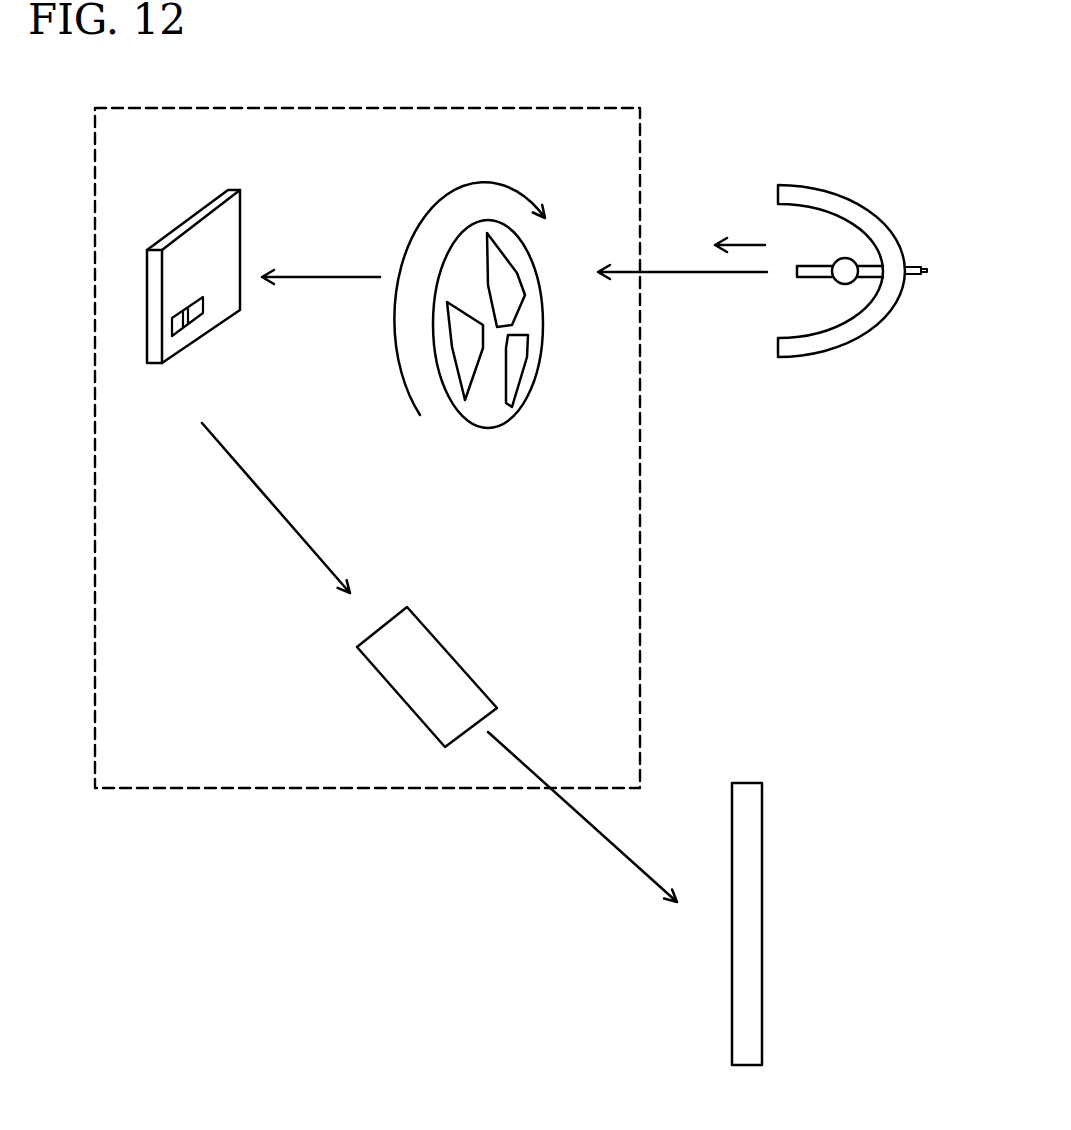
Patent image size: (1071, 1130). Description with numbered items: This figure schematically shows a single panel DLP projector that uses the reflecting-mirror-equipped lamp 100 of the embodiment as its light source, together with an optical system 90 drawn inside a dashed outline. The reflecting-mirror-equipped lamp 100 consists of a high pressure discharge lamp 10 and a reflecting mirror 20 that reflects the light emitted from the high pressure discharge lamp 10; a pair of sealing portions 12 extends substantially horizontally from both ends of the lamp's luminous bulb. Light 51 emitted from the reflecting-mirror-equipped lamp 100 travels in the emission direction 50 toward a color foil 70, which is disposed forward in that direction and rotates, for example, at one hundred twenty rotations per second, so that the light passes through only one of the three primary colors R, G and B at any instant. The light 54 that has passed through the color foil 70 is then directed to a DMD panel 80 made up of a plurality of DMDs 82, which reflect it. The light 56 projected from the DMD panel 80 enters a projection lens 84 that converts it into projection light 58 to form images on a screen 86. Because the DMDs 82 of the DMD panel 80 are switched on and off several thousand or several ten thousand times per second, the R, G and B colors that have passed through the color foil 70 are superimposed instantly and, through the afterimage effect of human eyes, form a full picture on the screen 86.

The high pressure discharge lamp 10 is at (855, 319).
The sealing portions 12 is at (808, 265).
The reflecting mirror 20 is at (873, 213).
The emission direction 50 is at (740, 245).
The light emitted from the reflecting-mirror-equipped lamp 51 is at (668, 272).
The light that has passed through the color foil 54 is at (317, 278).
The light projected from the DMD panel 56 is at (248, 485).
The projection light 58 is at (578, 815).
The color foil 70 is at (490, 428).
The DMD panel 80 is at (145, 280).
The DMDs 82 is at (180, 327).
The projection lens 84 is at (415, 682).
The screen 86 is at (762, 810).
The optical system 90 is at (538, 107).
The reflecting-mirror-equipped lamp 100 is at (860, 242).